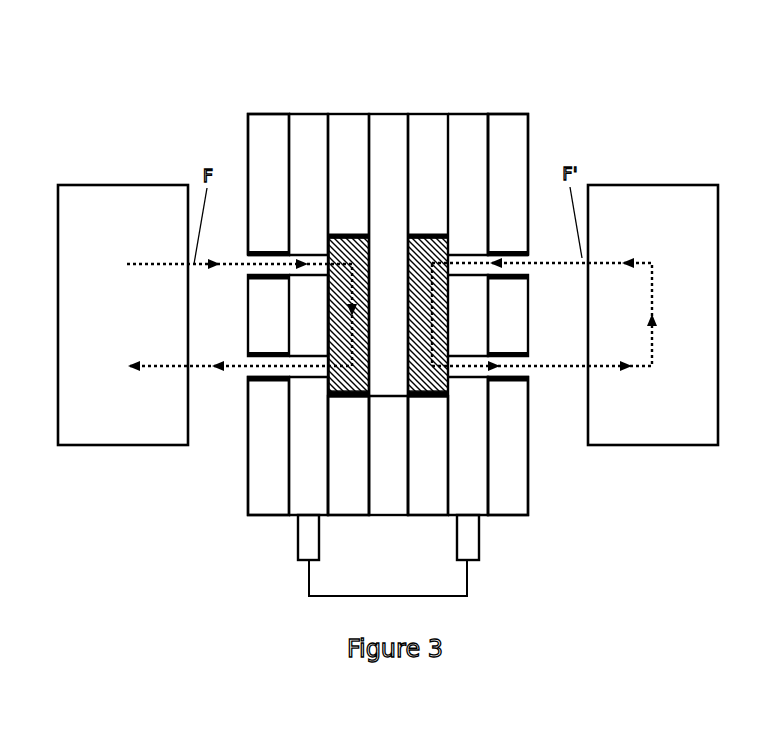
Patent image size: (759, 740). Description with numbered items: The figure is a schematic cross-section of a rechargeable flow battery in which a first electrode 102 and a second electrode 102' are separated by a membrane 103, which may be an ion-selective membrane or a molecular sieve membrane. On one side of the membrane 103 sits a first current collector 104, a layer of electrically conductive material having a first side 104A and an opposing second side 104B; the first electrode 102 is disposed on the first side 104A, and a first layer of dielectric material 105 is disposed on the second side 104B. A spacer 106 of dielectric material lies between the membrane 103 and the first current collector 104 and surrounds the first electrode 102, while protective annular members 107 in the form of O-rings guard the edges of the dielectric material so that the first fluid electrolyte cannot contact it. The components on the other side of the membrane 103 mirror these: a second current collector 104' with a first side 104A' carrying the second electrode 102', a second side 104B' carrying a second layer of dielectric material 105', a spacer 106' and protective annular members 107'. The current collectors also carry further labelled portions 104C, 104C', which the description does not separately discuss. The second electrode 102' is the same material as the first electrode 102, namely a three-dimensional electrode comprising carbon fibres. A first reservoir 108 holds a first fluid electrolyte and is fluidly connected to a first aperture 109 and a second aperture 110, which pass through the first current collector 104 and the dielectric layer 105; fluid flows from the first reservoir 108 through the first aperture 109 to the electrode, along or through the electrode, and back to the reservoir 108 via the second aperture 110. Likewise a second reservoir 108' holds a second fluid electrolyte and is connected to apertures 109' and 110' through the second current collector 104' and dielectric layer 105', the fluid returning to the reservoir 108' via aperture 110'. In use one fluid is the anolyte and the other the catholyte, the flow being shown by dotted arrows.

The first electrode 102 is at (281, 363).
The second electrode 102' is at (495, 377).
The membrane 103 is at (388, 114).
The first current collector 104 is at (290, 272).
The second current collector 104' is at (490, 272).
The first side of first current collector 104A is at (360, 473).
The first side of second current collector 104A' is at (422, 476).
The second side of first current collector 104B is at (263, 475).
The second side of second current collector 104B' is at (512, 482).
The electrode terminal 104C is at (280, 543).
The electrode terminal 104C' is at (506, 564).
The first layer of dielectric material 105 is at (251, 287).
The second layer of dielectric material 105' is at (527, 287).
The spacer 106 is at (337, 287).
The spacer 106' is at (440, 287).
The protective annular member 107 is at (282, 366).
The protective annular member 107' is at (496, 340).
The first reservoir 108 is at (123, 284).
The second reservoir 108' is at (653, 284).
The first aperture 109 is at (243, 184).
The first aperture 109' is at (530, 185).
The second aperture 110 is at (250, 446).
The second aperture 110' is at (529, 445).